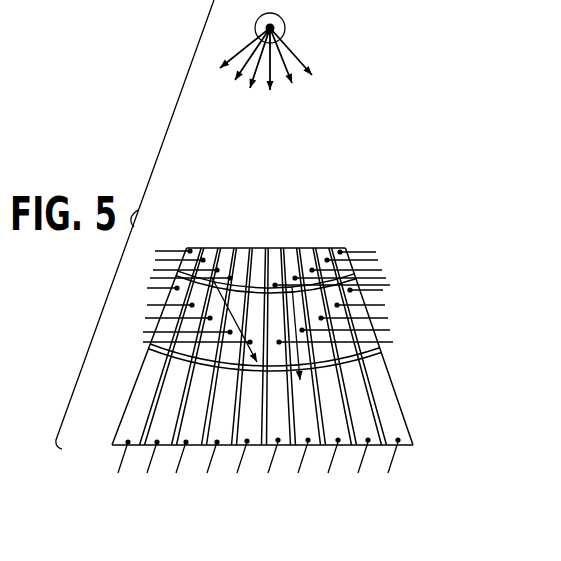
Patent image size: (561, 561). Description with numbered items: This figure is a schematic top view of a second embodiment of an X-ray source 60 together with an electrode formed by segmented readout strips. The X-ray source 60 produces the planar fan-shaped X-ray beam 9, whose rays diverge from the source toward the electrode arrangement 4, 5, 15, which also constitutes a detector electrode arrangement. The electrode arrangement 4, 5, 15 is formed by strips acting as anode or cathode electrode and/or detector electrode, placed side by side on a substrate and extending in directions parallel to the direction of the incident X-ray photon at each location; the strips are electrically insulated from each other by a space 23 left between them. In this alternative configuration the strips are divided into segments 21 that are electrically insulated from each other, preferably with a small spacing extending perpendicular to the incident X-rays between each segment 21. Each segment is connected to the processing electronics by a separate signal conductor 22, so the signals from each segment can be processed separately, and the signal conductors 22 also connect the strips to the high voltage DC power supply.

The X-ray source 60 is at (284, 21).
The planar X-ray beam 9 is at (297, 50).
The electrode arrangement 4 is at (277, 317).
The electrode arrangement 5 is at (277, 317).
The electrode arrangement 15 is at (352, 237).
The segments 21 is at (303, 248).
The signal conductor 22 is at (398, 462).
The space 23 is at (231, 283).